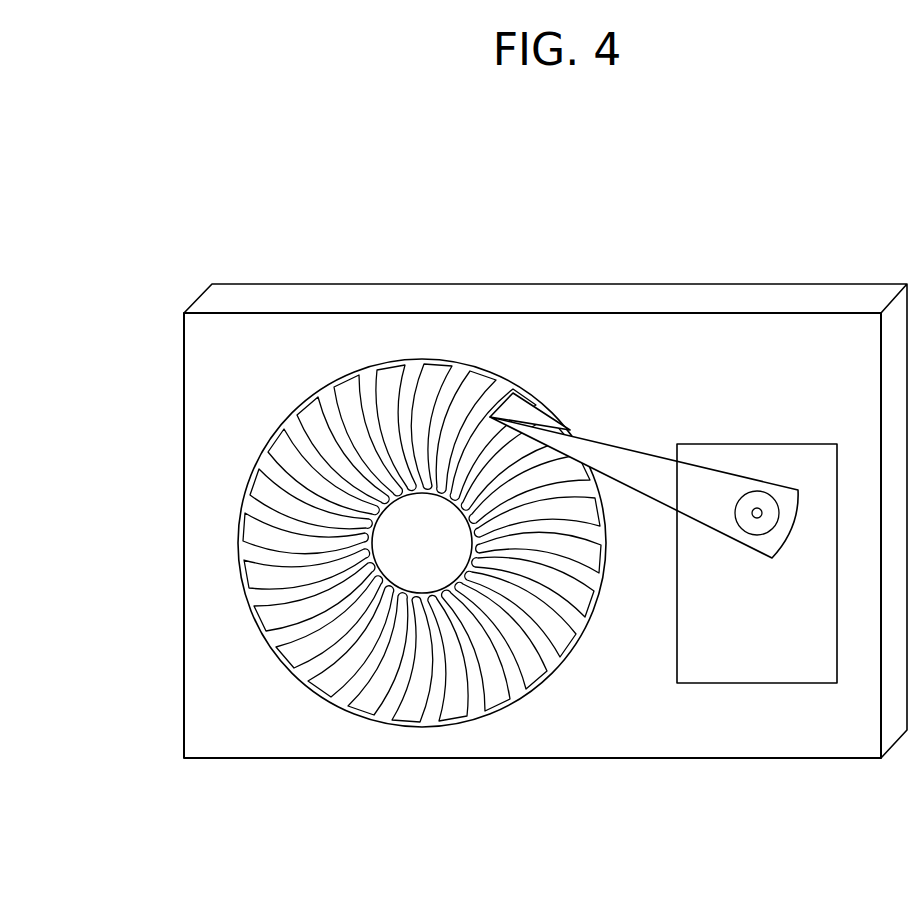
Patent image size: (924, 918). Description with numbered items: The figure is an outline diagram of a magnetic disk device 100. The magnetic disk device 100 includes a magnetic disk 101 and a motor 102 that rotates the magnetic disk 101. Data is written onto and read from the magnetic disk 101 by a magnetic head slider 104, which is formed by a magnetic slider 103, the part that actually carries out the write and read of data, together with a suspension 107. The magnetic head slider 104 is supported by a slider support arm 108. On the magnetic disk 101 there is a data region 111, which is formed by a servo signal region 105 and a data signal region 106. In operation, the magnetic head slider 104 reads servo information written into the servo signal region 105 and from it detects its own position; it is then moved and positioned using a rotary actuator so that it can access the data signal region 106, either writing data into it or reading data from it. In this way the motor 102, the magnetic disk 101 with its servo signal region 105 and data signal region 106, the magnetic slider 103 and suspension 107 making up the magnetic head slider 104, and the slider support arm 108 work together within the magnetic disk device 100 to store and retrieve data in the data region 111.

The magnetic disk device 100 is at (182, 205).
The magnetic disk 101 is at (272, 431).
The motor 102 is at (390, 573).
The magnetic slider 103 is at (497, 412).
The magnetic head slider 104 is at (642, 369).
The servo signal region 105 is at (348, 667).
The data signal region 106 is at (510, 677).
The suspension 107 is at (605, 455).
The slider support arm 108 is at (749, 668).
The data region 111 is at (422, 628).